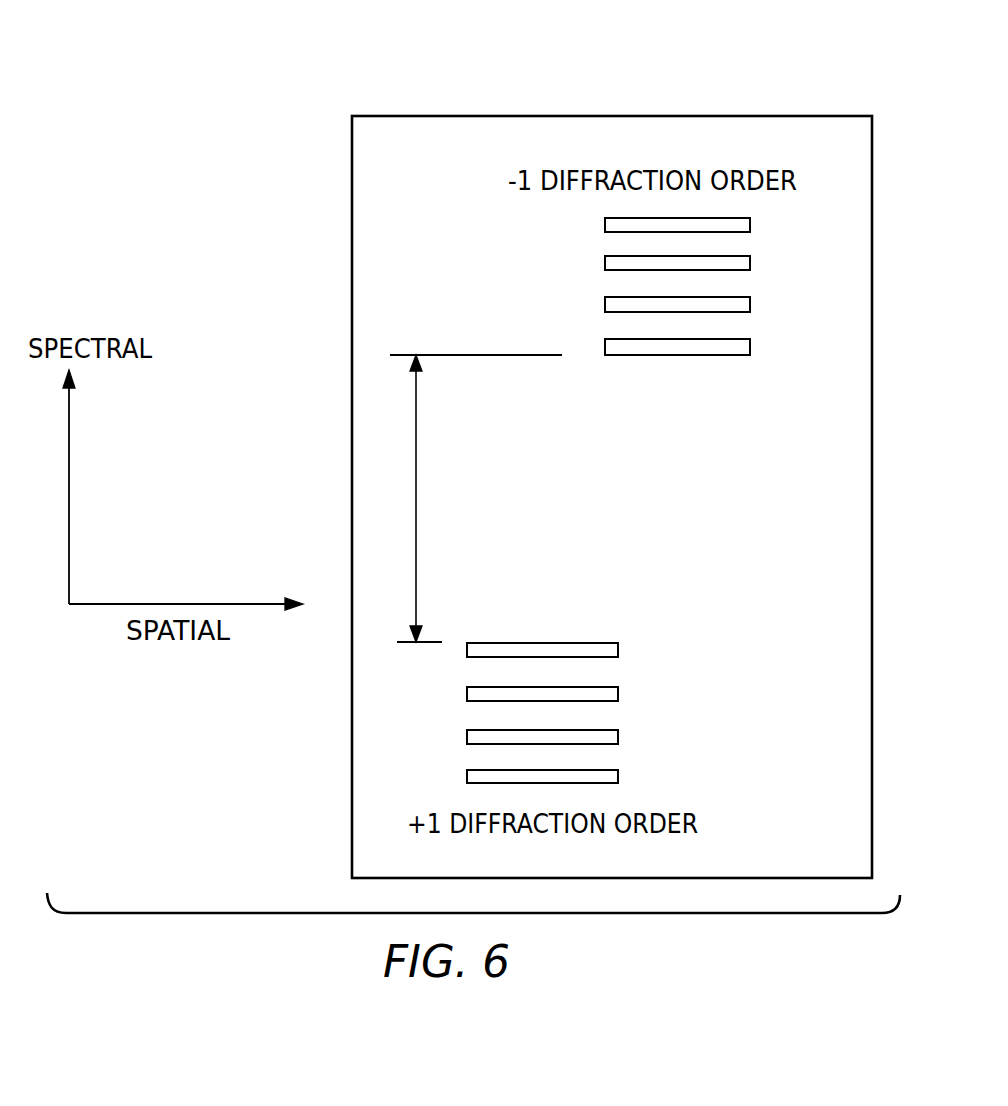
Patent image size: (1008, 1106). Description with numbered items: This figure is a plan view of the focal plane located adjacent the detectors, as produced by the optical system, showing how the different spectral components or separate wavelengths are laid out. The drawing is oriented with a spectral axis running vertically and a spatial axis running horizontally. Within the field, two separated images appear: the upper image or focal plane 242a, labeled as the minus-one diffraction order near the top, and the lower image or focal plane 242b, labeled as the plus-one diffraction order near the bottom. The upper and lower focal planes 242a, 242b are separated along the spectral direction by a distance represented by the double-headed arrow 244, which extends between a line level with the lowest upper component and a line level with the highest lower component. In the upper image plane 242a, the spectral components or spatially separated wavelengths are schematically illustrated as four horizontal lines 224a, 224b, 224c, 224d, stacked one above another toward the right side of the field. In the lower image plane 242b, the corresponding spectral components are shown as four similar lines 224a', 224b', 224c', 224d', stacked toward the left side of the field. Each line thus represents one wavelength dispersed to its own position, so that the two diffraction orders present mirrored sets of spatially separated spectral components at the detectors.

The upper image or focal plane 242a is at (748, 104).
The lower image or focal plane 242b is at (651, 732).
The spectral component line 224a is at (726, 218).
The spectral component line 224b is at (723, 260).
The spectral component line 224c is at (719, 304).
The spectral component line 224d is at (722, 352).
The spectral component line 224a' is at (603, 639).
The spectral component line 224b' is at (603, 685).
The spectral component line 224c' is at (603, 735).
The spectral component line 224d' is at (604, 791).
The separation distance arrow 244 is at (416, 520).